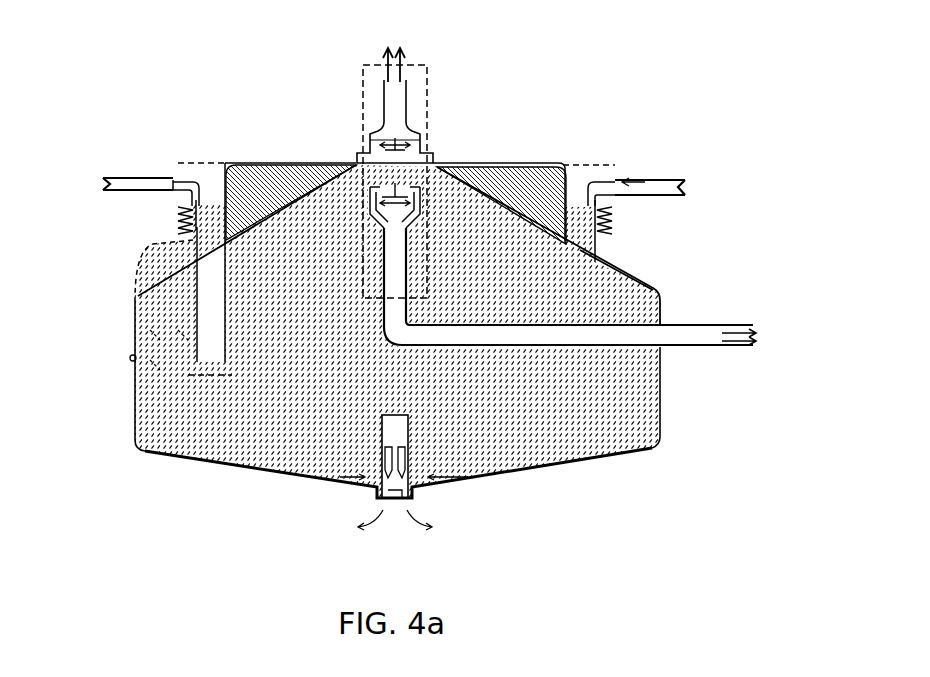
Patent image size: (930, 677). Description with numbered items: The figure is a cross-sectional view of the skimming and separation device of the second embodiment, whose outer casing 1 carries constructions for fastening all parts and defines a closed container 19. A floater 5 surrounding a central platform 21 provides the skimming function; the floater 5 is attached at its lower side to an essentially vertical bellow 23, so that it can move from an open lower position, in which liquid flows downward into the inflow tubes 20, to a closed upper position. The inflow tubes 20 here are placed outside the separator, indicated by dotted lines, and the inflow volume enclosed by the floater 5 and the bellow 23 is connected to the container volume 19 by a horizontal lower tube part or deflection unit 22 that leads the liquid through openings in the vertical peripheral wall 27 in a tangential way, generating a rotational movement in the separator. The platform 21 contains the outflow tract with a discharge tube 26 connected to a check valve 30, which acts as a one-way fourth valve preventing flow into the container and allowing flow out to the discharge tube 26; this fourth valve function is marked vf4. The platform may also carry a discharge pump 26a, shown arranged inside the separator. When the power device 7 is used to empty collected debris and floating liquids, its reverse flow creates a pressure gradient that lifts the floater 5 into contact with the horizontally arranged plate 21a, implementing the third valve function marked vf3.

The outer casing 1 is at (660, 303).
The floater 5 is at (160, 178).
The power device 7 is at (404, 472).
The closed container 19 is at (582, 303).
The inflow tubes 20 is at (193, 290).
The central platform 21 is at (507, 173).
The horizontally arranged plate 21a is at (193, 160).
The deflection unit 22 is at (182, 380).
The bellow 23 is at (170, 218).
The discharge tube 26 is at (395, 95).
The discharge pump 26a is at (355, 243).
The vertical wall 27 is at (133, 337).
The check valve 30 is at (397, 130).
The valve function 3 vf3 is at (180, 172).
The valve function 4 vf4 is at (398, 195).